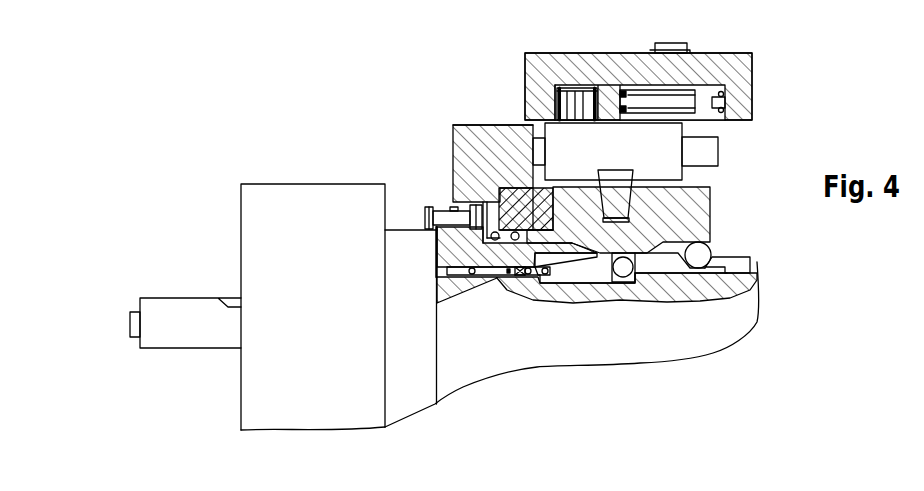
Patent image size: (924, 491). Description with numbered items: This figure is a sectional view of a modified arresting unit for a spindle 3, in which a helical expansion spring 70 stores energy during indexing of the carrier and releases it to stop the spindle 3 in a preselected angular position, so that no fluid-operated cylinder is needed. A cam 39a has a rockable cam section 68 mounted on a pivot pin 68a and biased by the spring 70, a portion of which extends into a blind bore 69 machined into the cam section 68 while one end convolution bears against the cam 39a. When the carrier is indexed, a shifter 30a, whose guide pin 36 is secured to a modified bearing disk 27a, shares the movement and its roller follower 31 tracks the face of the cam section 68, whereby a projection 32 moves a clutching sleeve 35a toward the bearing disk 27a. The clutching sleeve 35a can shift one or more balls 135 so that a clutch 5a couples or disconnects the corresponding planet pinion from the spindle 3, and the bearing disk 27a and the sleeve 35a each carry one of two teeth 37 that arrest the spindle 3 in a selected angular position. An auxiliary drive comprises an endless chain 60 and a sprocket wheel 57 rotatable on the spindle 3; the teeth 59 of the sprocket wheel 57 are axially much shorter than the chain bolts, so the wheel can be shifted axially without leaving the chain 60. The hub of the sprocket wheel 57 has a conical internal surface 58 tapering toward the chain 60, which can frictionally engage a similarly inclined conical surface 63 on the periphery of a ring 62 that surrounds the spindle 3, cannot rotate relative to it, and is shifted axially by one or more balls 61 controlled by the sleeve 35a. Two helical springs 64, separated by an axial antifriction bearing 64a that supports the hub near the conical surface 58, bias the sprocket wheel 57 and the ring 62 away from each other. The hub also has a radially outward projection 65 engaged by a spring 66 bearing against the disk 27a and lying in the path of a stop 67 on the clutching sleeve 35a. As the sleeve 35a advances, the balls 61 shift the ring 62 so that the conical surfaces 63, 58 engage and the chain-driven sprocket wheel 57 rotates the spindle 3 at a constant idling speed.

The spindle 3 is at (745, 327).
The clutch 5a is at (757, 262).
The bearing disk 27a is at (503, 130).
The shifter 30a is at (668, 128).
The roller follower 31 is at (557, 92).
The projection 32 is at (623, 182).
The clutching sleeve 35a is at (700, 222).
The guide pin 36 is at (712, 152).
The teeth 37 is at (497, 203).
The cam 39a is at (563, 85).
The sprocket wheel 57 is at (443, 254).
The conical internal surface 58 is at (553, 280).
The teeth 59 is at (465, 220).
The endless chain 60 is at (427, 209).
The balls 61 is at (633, 280).
The ring 62 is at (600, 280).
The conical surface 63 is at (573, 277).
The helical springs 64 is at (525, 279).
The axial antifriction bearing 64a is at (519, 285).
The projection 65 is at (500, 233).
The spring 66 is at (493, 235).
The stop 67 is at (515, 223).
The cam section 68 is at (605, 85).
The pivot pin 68a is at (690, 44).
The blind bore 69 is at (651, 97).
The helical expansion spring 70 is at (723, 93).
The balls 135 is at (697, 280).